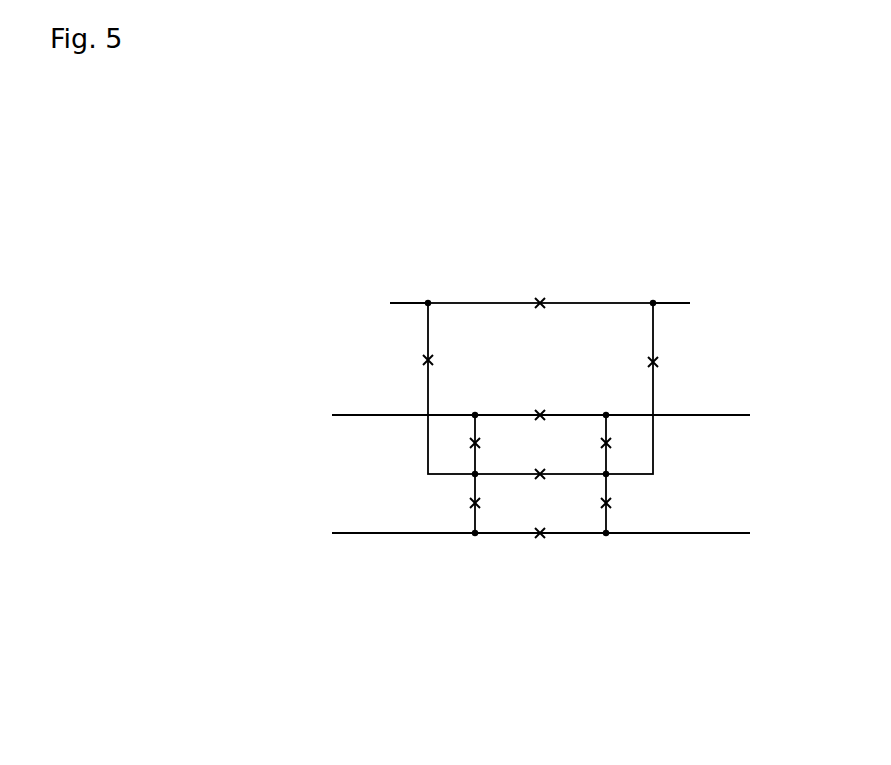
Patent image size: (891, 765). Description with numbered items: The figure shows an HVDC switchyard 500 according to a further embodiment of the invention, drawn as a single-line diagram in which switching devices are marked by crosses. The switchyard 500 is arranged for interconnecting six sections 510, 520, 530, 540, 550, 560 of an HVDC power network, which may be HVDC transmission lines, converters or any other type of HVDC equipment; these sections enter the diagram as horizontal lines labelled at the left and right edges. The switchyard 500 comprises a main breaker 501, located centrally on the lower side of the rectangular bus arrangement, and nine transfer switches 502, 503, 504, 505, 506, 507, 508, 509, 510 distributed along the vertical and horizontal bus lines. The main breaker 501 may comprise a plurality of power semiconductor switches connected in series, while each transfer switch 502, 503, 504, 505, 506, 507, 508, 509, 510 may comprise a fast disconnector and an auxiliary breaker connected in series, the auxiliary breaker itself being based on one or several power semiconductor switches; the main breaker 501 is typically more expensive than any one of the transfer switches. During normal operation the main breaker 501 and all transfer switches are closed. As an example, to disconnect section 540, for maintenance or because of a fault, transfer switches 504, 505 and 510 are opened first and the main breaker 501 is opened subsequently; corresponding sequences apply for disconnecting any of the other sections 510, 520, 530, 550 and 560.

The switchyard 500 is at (392, 658).
The main breaker 501 is at (551, 457).
The transfer switch 502 is at (445, 502).
The transfer switch 503 is at (464, 443).
The transfer switch 504 is at (620, 443).
The transfer switch 505 is at (635, 505).
The transfer switch 506 is at (538, 397).
The transfer switch 507 is at (541, 552).
The transfer switch 508 is at (397, 362).
The transfer switch 509 is at (684, 362).
The transfer switch / section 510 is at (332, 533).
The section 520 is at (332, 415).
The section 530 is at (390, 303).
The section 540 is at (690, 303).
The section 550 is at (750, 415).
The section 560 is at (750, 533).